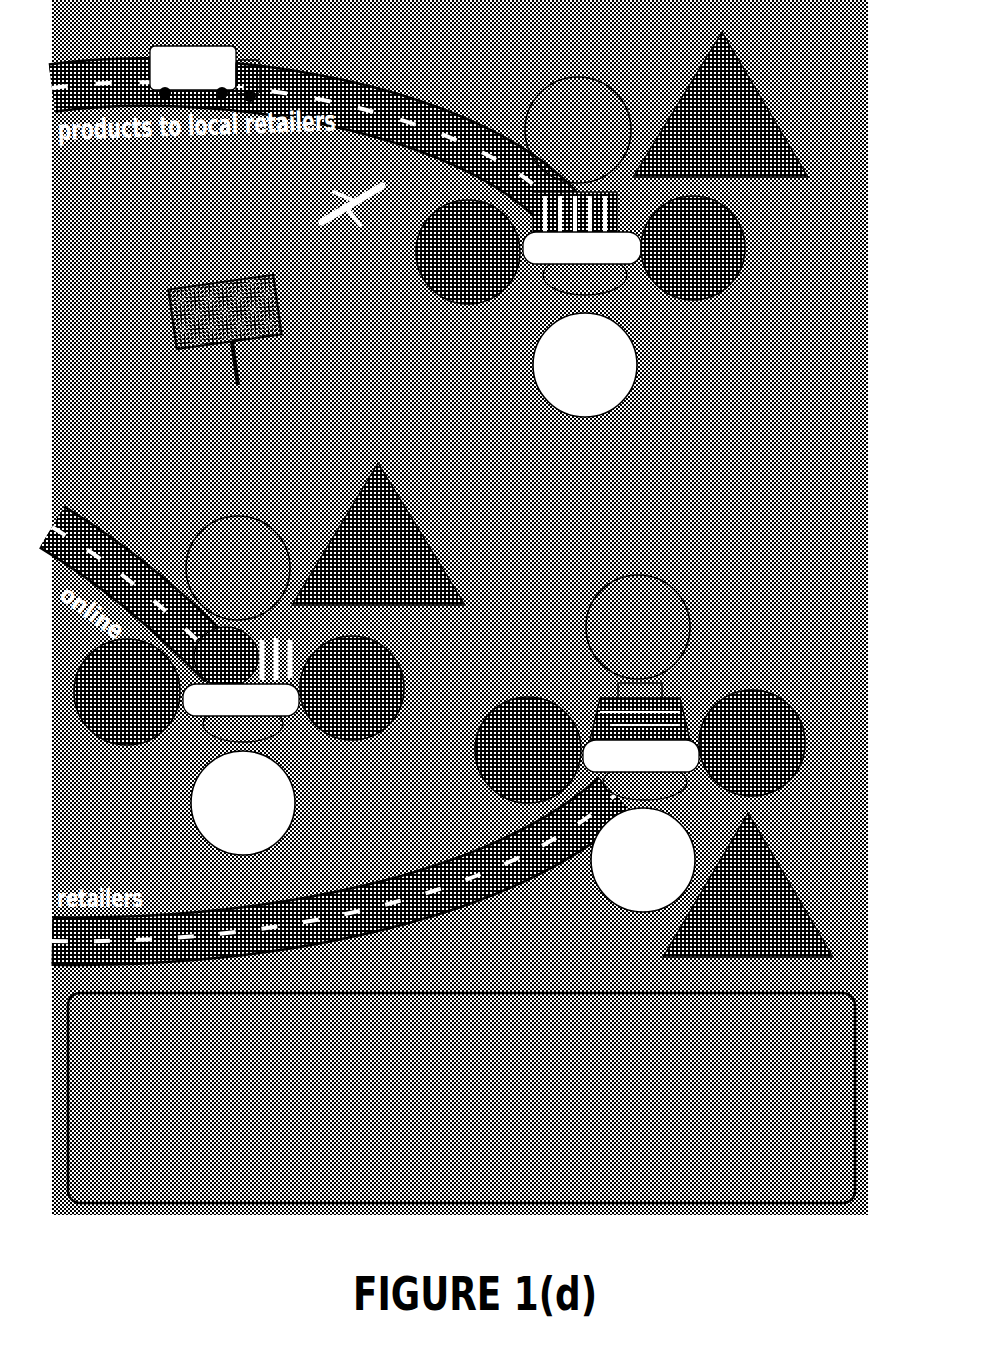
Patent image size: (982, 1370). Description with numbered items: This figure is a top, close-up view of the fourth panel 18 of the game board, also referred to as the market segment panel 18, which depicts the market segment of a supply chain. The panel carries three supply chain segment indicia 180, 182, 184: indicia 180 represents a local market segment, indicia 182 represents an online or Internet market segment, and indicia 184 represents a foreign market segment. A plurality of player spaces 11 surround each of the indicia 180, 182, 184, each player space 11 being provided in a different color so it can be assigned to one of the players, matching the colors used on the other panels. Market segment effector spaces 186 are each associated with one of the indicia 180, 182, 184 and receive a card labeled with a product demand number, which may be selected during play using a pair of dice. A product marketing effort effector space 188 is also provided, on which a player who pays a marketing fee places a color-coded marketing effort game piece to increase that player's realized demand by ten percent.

The player spaces 11 is at (553, 117).
The fourth panel 18 is at (168, 1213).
The supply chain segment indicia 180 is at (608, 288).
The supply chain segment indicia 182 is at (267, 731).
The supply chain segment indicia 184 is at (677, 707).
The market segment effector spaces 186 is at (684, 92).
The product marketing effort effector space 188 is at (224, 290).